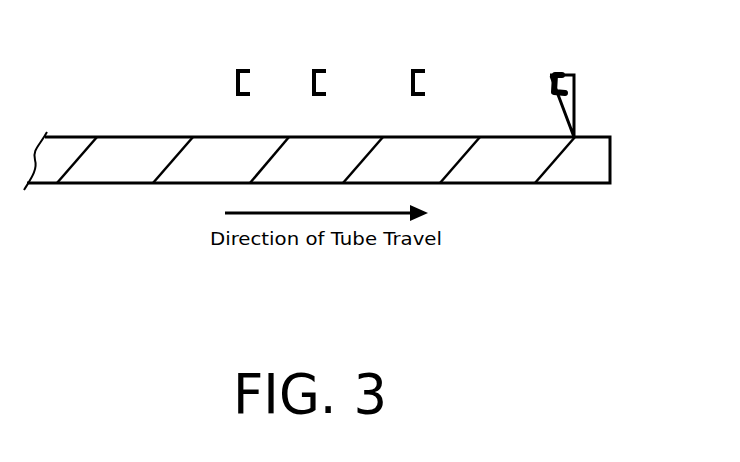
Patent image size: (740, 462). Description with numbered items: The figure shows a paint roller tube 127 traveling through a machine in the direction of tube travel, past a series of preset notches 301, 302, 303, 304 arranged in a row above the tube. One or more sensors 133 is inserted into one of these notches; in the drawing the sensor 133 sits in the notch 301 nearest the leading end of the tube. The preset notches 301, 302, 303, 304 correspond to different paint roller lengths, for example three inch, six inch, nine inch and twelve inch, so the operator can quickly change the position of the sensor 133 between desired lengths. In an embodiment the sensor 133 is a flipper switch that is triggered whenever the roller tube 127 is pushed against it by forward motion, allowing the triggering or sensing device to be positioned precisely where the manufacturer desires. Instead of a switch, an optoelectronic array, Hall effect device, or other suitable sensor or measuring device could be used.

The paint roller tube 127 is at (610, 165).
The sensor 133 is at (575, 104).
The preset notch 301 is at (556, 72).
The preset notch 302 is at (415, 68).
The preset notch 303 is at (318, 68).
The preset notch 304 is at (242, 68).